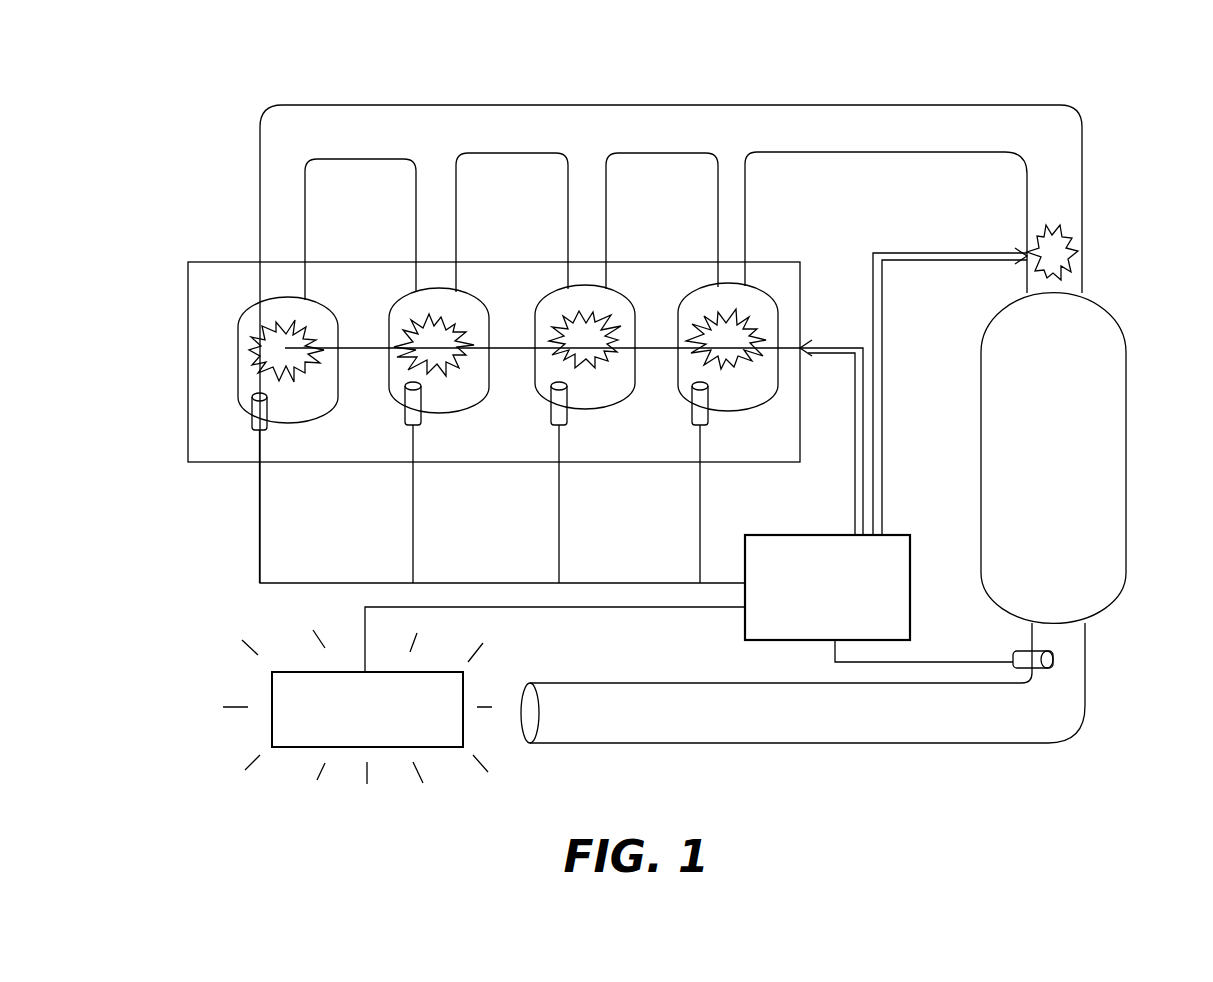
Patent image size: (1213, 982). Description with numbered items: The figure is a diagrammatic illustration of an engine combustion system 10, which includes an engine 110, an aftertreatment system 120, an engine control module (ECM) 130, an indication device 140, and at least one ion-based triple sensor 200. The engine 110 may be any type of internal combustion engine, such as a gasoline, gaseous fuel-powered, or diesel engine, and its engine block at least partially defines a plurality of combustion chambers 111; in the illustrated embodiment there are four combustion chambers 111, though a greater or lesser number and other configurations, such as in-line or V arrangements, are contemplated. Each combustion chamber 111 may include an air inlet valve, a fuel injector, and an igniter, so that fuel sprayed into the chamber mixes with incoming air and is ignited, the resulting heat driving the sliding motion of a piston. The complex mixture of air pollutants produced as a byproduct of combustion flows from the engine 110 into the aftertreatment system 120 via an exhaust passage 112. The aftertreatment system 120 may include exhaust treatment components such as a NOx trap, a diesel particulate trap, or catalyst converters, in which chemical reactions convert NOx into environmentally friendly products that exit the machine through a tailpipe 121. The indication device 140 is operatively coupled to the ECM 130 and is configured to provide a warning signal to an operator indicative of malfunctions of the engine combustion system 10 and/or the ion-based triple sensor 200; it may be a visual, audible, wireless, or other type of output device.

The engine combustion system 10 is at (1105, 127).
The engine 110 is at (188, 322).
The combustion chamber 111 is at (320, 307).
The exhaust passage 112 is at (566, 105).
The aftertreatment system 120 is at (1128, 392).
The tailpipe 121 is at (620, 683).
The engine control module (ECM) 130 is at (893, 535).
The indication device 140 is at (262, 706).
The ion-based triple sensor 200 is at (267, 428).